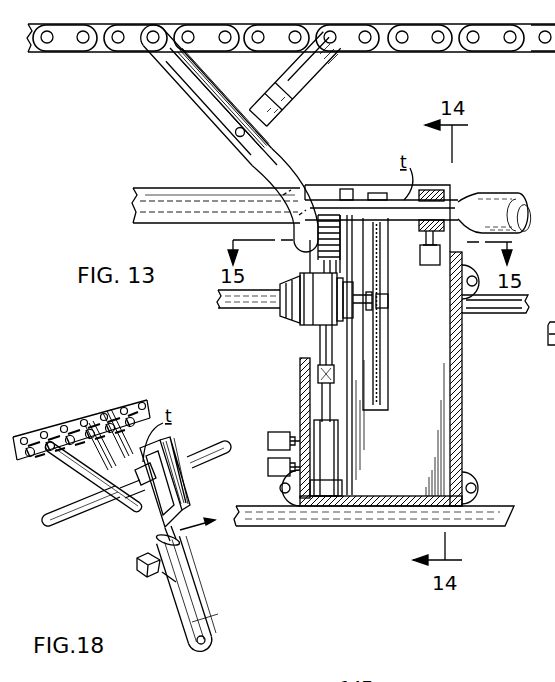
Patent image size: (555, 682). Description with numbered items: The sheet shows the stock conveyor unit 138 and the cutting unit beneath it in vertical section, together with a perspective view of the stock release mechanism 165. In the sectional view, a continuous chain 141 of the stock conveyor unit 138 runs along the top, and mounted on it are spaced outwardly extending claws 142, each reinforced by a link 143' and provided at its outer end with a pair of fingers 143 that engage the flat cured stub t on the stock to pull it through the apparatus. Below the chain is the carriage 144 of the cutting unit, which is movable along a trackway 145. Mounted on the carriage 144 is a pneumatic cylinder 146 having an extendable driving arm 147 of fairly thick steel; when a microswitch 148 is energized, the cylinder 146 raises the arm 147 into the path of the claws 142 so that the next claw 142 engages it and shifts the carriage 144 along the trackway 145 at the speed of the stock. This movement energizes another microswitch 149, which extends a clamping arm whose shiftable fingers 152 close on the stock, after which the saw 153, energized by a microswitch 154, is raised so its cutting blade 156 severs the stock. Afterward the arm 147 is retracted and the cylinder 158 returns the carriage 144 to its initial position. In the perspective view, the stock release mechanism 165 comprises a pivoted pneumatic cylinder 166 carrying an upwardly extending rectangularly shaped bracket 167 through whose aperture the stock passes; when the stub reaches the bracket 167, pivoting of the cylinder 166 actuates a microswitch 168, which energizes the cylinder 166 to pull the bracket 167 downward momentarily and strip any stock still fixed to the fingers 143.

In FIG. 13, the continuous chain 141 is at (443, 27).
In FIG. 18, the continuous chain 141 is at (93, 413).
In FIG. 13, the stock conveyor unit 138 is at (182, 90).
In FIG. 18, the stock conveyor unit 138 is at (80, 479).
In FIG. 13, the claw 142 is at (257, 152).
In FIG. 13, the finger 143 is at (302, 196).
In FIG. 18, the finger 143 is at (93, 488).
In FIG. 13, the link 143' is at (303, 79).
In FIG. 13, the carriage 144 is at (462, 393).
In FIG. 13, the trackway 145 is at (500, 503).
In FIG. 13, the pneumatic cylinder 146 is at (320, 437).
In FIG. 13, the driving arm 147 is at (330, 342).
In FIG. 13, the microswitch 148 is at (262, 440).
In FIG. 13, the microswitch 149 is at (266, 462).
In FIG. 13, the shiftable fingers 152 is at (440, 197).
In FIG. 13, the saw 153 is at (381, 350).
In FIG. 13, the microswitch 154 is at (430, 267).
In FIG. 13, the cutting blade 156 is at (385, 370).
In FIG. 13, the cylinder 158 is at (554, 406).
In FIG. 18, the stock release mechanism 165 is at (157, 576).
In FIG. 18, the pneumatic cylinder 166 is at (208, 609).
In FIG. 18, the rectangularly shaped bracket 167 is at (180, 500).
In FIG. 18, the microswitch 168 is at (137, 562).